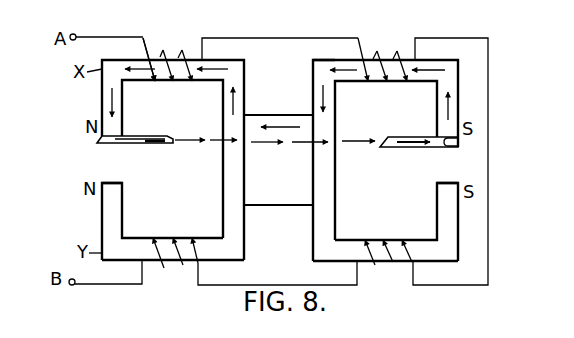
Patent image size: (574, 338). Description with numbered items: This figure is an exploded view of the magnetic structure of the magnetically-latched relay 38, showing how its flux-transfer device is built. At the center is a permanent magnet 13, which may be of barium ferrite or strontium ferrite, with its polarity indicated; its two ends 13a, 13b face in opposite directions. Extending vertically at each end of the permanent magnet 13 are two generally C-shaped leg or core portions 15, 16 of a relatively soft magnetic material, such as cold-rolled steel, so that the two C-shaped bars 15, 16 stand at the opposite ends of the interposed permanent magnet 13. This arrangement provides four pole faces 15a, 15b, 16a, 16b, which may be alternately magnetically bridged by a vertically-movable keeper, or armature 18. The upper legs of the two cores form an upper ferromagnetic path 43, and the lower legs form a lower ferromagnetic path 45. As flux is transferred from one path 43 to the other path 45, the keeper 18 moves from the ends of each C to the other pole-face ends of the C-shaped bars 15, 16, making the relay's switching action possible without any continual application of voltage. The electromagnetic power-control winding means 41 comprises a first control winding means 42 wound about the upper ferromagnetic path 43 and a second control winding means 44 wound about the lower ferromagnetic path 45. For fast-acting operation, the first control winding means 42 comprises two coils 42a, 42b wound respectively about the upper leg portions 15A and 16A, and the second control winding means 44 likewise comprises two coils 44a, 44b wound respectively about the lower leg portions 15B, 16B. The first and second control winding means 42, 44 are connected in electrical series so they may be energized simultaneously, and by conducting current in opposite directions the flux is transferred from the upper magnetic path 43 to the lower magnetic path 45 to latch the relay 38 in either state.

The permanent magnet 13 is at (266, 115).
The end of permanent magnet 13a is at (258, 205).
The end of permanent magnet 13b is at (306, 212).
The C-shaped core portion 15 is at (102, 98).
The upper leg portion 15A is at (108, 60).
The lower leg portion 15B is at (118, 260).
The pole face 15a is at (103, 140).
The pole face 15b is at (112, 183).
The C-shaped core portion 16 is at (485, 108).
The upper leg portion 16A is at (458, 60).
The lower leg portion 16B is at (444, 262).
The pole face 16a is at (445, 148).
The pole face 16b is at (444, 175).
The armature 18 is at (193, 158).
The relay 38 is at (283, 31).
The electromagnetic control winding means 41 is at (167, 264).
The first control winding means 42 is at (163, 50).
The coil 42a is at (173, 81).
The coil 42b is at (387, 81).
The upper ferromagnetic path 43 is at (318, 60).
The second control winding means 44 is at (393, 263).
The coil 44a is at (171, 234).
The coil 44b is at (386, 238).
The lower ferromagnetic path 45 is at (236, 259).